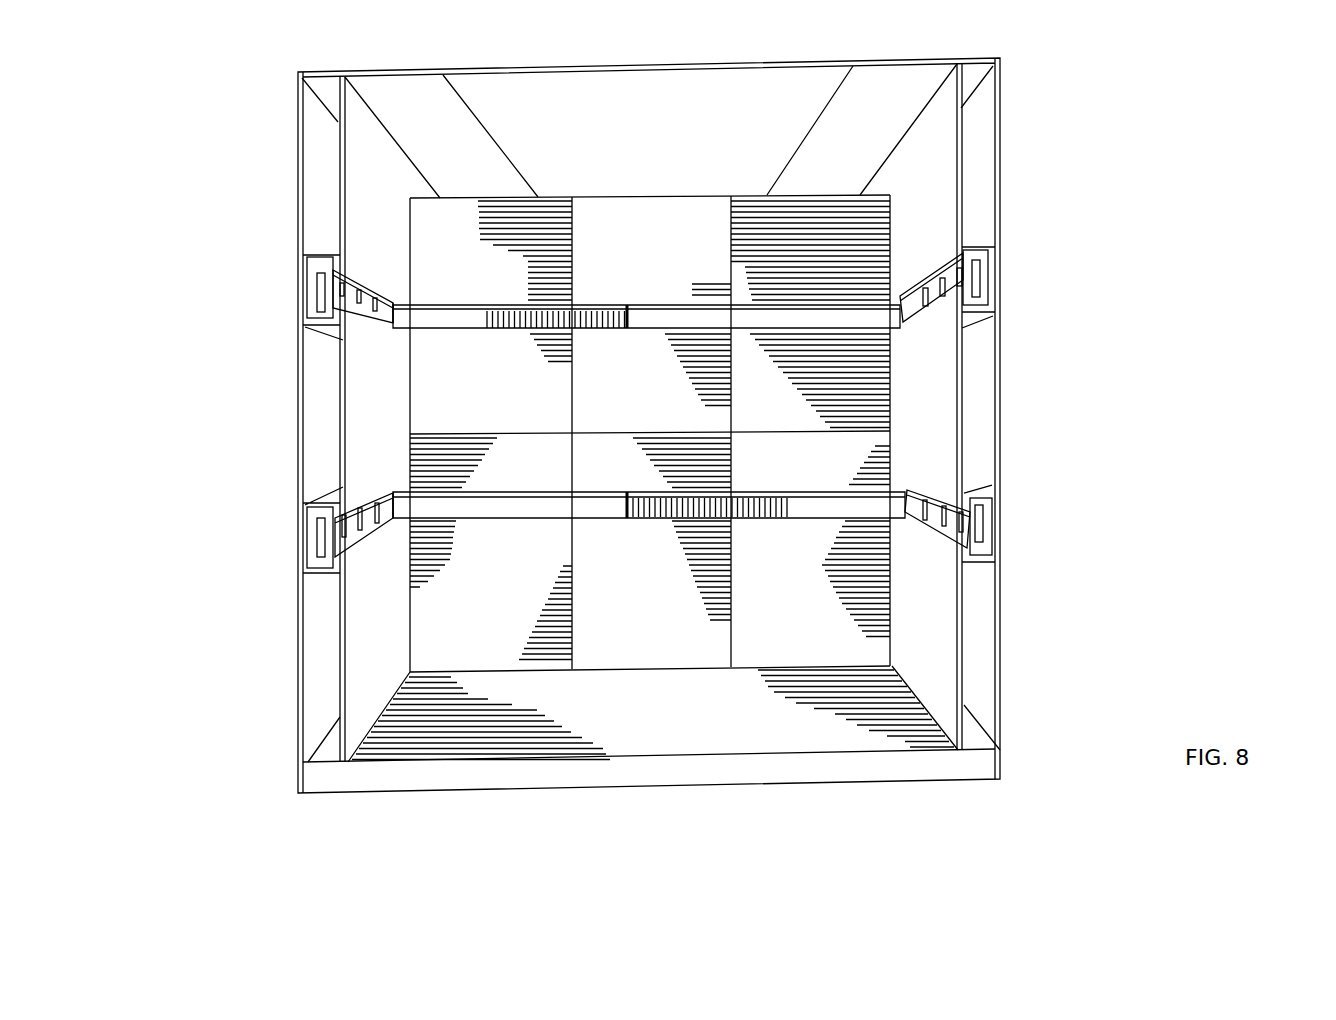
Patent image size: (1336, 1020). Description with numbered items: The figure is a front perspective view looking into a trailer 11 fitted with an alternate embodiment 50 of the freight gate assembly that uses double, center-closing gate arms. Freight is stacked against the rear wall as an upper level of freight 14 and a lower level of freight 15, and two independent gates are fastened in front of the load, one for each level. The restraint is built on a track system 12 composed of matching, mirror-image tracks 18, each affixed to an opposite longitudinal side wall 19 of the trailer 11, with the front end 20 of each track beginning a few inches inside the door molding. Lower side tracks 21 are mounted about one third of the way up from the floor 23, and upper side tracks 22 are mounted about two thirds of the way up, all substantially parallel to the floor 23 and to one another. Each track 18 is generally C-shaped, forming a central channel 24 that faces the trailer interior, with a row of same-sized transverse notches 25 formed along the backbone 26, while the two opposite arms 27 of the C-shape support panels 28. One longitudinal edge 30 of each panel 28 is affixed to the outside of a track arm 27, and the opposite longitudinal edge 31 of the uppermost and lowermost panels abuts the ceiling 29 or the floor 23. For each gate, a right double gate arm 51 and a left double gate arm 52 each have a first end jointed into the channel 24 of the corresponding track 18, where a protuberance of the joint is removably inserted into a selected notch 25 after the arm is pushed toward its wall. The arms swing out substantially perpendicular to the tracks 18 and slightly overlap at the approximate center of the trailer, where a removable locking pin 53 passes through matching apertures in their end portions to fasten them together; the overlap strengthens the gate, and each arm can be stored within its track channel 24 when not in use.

The trailer 11 is at (978, 52).
The track system 12 is at (660, 408).
The upper level of freight 14 is at (452, 236).
The lower level of freight 15 is at (652, 601).
The track 18 is at (345, 292).
The longitudinal side wall 19 is at (334, 194).
The front end of the track 20 is at (307, 568).
The lower side track 21 is at (333, 498).
The upper side track 22 is at (307, 318).
The floor 23 is at (677, 721).
The central channel 24 is at (990, 262).
The central notch 25 is at (371, 320).
The backbone 26 is at (985, 290).
The arm of the C-shape 27 is at (963, 257).
The panel 28 is at (925, 248).
The ceiling 29 is at (867, 141).
The longitudinal edge of panel 30 is at (652, 399).
The opposite longitudinal edge 31 is at (923, 108).
The alternate embodiment of the freight gate assembly 50 is at (747, 379).
The right double gate arm 51 is at (478, 326).
The left double gate arm 52 is at (752, 326).
The locking pin 53 is at (640, 322).